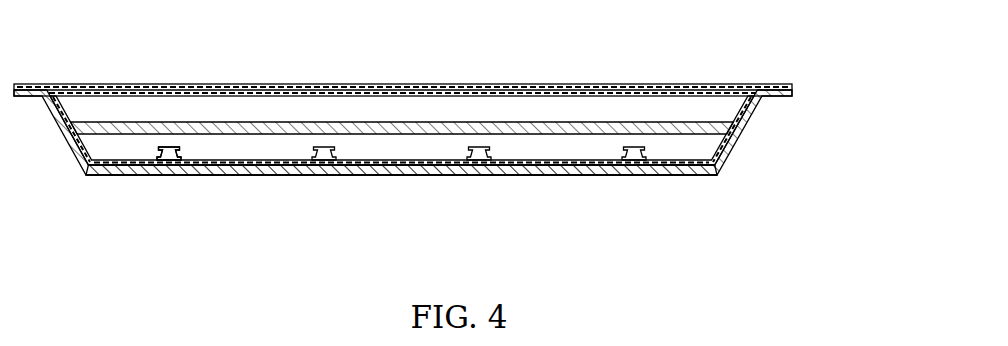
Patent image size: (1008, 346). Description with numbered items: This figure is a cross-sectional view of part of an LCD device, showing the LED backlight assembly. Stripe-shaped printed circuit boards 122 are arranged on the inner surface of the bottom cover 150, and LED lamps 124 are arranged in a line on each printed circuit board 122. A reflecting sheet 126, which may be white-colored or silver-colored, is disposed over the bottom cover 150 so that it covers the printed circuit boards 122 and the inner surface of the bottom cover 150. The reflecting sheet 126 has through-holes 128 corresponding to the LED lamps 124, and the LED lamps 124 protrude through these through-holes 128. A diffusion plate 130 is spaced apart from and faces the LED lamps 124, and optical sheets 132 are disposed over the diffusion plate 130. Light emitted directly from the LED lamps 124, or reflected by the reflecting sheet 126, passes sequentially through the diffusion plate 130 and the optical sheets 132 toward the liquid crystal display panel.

The printed circuit board 122 is at (168, 163).
The LED lamp 124 is at (167, 147).
The reflecting sheet 126 is at (280, 175).
The through-hole 128 is at (191, 142).
The diffusion plate 130 is at (286, 124).
The optical sheet 132 is at (802, 85).
The bottom cover 150 is at (443, 175).